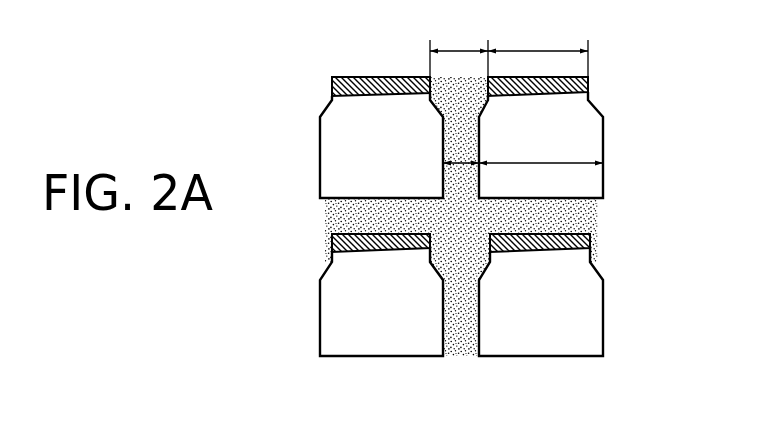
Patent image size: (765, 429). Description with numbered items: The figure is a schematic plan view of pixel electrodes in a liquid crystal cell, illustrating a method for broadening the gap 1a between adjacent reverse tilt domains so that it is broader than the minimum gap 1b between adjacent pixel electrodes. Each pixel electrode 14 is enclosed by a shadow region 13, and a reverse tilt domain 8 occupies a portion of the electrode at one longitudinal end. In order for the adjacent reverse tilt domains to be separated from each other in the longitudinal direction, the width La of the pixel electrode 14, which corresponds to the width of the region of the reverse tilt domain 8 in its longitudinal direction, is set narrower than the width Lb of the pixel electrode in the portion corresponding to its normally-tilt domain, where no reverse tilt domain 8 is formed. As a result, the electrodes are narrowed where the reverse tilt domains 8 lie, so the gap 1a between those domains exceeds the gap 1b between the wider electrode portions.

The gap between adjacent reverse tilt domains 1a is at (459, 51).
The width of pixel electrode La is at (538, 51).
The minimum gap between adjacent pixel electrodes 1b is at (456, 161).
The width of pixel electrode Lb is at (541, 150).
The reverse tilt domain 8 is at (588, 80).
The pixel electrode 14 is at (603, 137).
The shadow region 13 is at (563, 216).